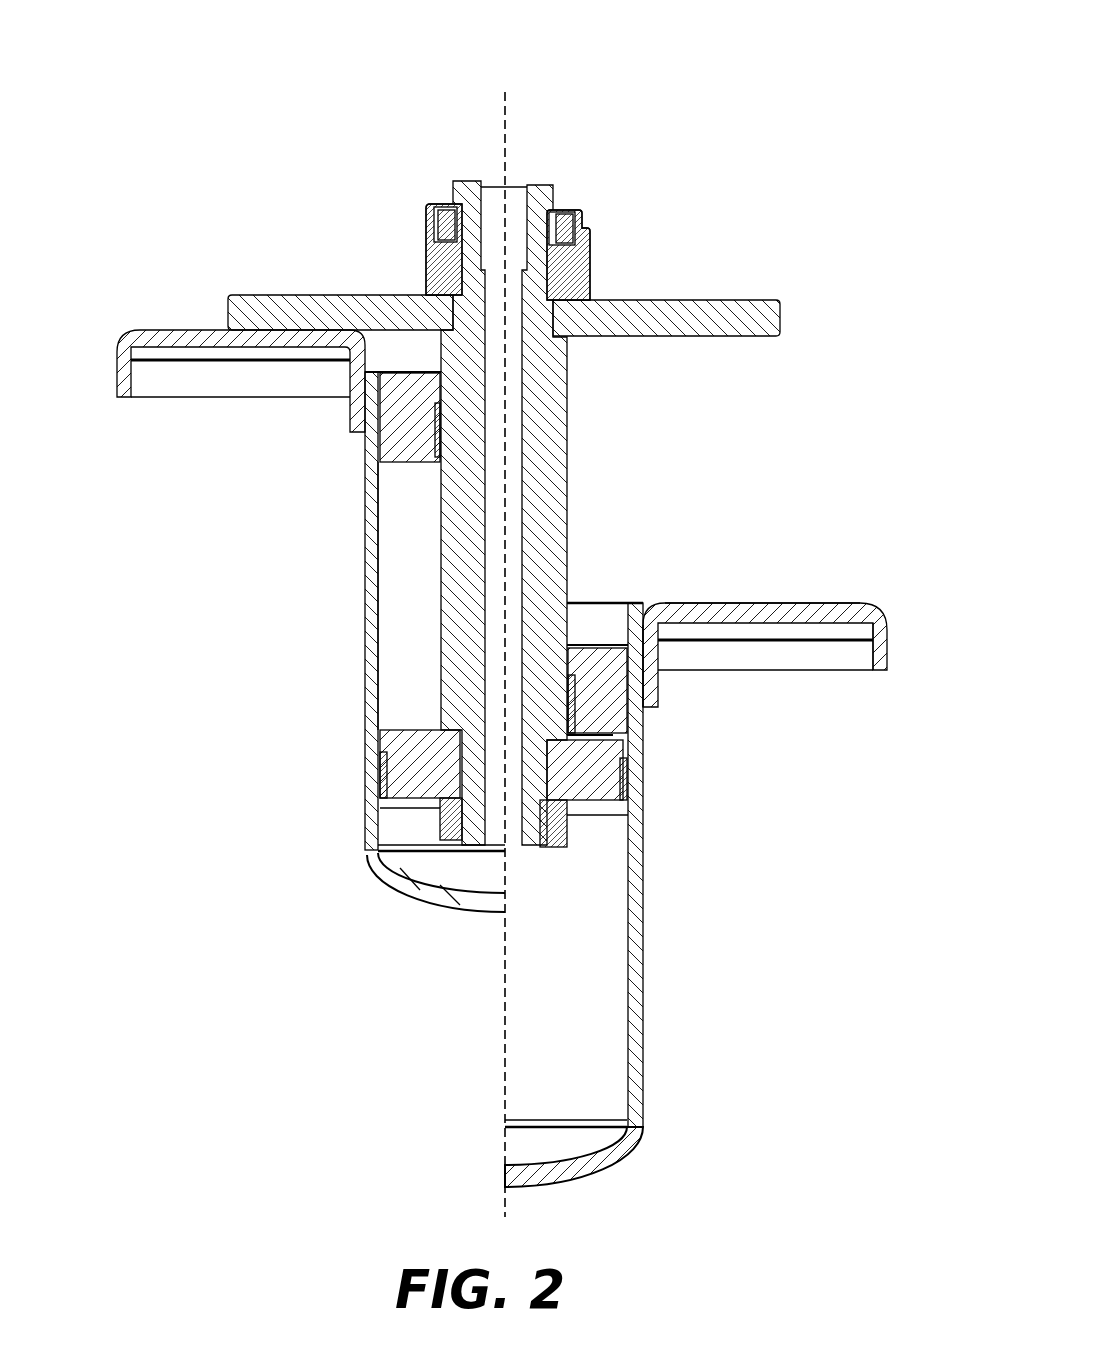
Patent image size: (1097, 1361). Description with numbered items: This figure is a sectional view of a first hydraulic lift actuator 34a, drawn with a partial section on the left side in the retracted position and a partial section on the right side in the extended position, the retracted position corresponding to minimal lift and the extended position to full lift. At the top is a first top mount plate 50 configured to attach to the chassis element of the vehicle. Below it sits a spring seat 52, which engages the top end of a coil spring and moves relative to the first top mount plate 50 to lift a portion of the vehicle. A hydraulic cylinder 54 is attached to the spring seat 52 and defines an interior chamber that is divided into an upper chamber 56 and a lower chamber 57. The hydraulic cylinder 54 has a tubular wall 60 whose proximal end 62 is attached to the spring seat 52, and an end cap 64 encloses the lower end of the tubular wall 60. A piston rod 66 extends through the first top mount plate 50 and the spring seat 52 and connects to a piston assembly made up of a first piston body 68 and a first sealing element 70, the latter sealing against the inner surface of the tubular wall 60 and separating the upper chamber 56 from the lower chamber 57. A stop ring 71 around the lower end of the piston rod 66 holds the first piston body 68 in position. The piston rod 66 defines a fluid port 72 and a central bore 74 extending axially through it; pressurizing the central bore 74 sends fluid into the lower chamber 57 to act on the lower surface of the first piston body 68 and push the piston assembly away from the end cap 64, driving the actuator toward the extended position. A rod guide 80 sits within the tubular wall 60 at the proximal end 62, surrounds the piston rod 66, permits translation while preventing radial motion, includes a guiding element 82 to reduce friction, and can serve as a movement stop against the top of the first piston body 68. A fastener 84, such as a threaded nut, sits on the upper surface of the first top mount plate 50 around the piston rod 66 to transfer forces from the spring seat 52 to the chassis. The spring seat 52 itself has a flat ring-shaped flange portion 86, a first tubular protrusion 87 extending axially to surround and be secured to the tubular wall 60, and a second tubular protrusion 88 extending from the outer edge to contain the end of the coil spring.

The first hydraulic lift actuator 34a is at (118, 58).
The first top mount plate 50 is at (240, 300).
The spring seat 52 is at (130, 326).
The hydraulic cylinder 54 is at (363, 520).
The upper chamber 56 is at (403, 662).
The lower chamber 57 is at (410, 832).
The tubular wall 60 is at (372, 578).
The proximal end 62 is at (377, 388).
The end cap 64 is at (455, 897).
The piston rod 66 is at (555, 436).
The first piston body 68 is at (403, 748).
The first sealing element 70 is at (385, 778).
The stop ring 71 is at (560, 820).
The fluid port 72 is at (493, 180).
The central bore 74 is at (538, 213).
The rod guide 80 is at (608, 711).
The guiding element 82 is at (572, 700).
The fastener 84 is at (440, 270).
The flange portion 86 is at (762, 605).
The first tubular protrusion 87 is at (650, 690).
The second tubular protrusion 88 is at (885, 650).